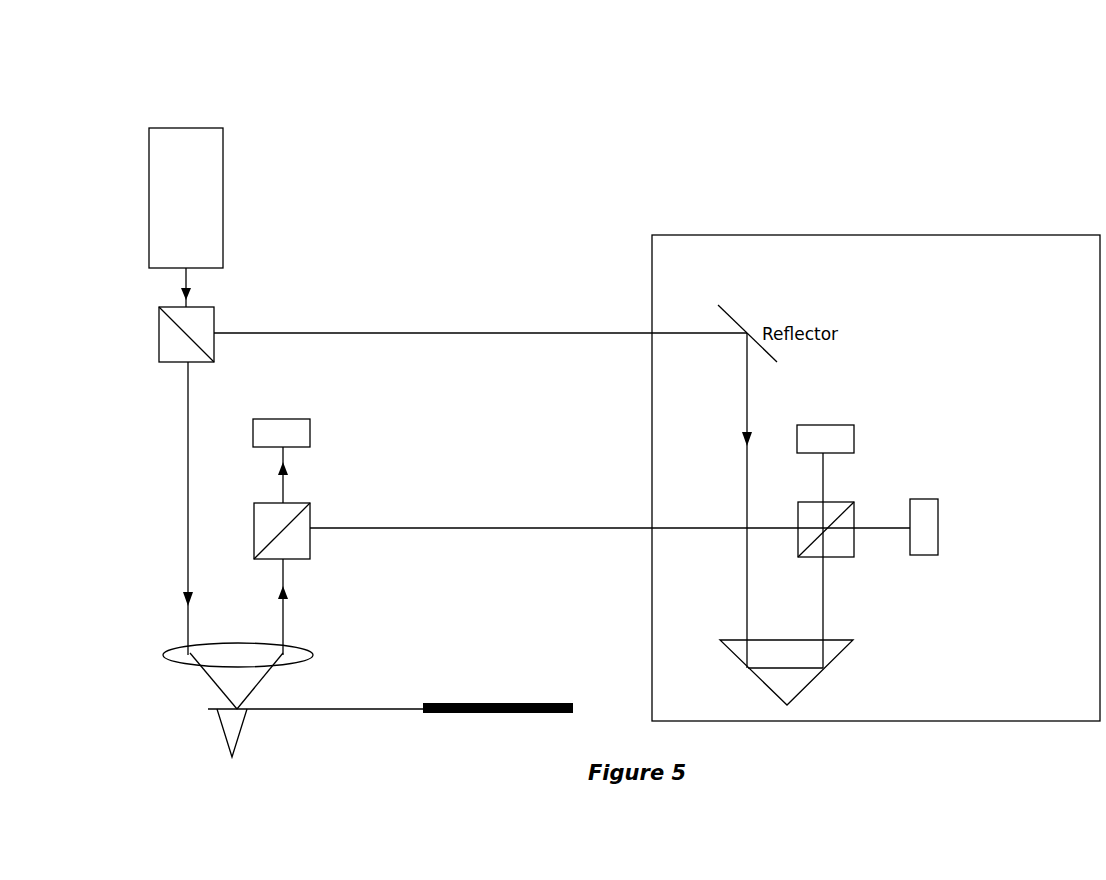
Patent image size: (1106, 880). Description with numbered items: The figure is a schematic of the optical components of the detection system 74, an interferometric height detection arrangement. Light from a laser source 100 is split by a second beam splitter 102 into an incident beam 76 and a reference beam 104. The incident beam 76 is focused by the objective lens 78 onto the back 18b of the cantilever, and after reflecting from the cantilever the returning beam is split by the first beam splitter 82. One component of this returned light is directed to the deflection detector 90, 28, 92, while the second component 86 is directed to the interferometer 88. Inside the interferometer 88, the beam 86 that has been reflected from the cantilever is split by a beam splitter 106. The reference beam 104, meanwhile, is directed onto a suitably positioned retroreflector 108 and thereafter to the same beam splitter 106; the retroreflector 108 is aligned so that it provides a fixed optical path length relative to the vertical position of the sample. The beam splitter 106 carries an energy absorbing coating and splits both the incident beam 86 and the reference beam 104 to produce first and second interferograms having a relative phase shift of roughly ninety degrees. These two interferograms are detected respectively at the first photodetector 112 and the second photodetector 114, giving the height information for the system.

The detection system 74 is at (118, 78).
The laser source 100 is at (149, 190).
The second beam splitter 102 is at (159, 336).
The reference beam 104 is at (430, 333).
The incident beam 76 is at (188, 503).
The first beam splitter 82 is at (255, 529).
The deflection detector 90 is at (319, 403).
The deflection detector 28 is at (319, 403).
The deflection detector 92 is at (310, 431).
The second component 86 is at (482, 529).
The objective lens 78 is at (163, 655).
The back of the cantilever 18b is at (222, 693).
The interferometer 88 is at (862, 235).
The first photodetector 112 is at (855, 437).
The beam splitter 106 is at (837, 555).
The second photodetector 114 is at (923, 500).
The retroreflector 108 is at (768, 687).